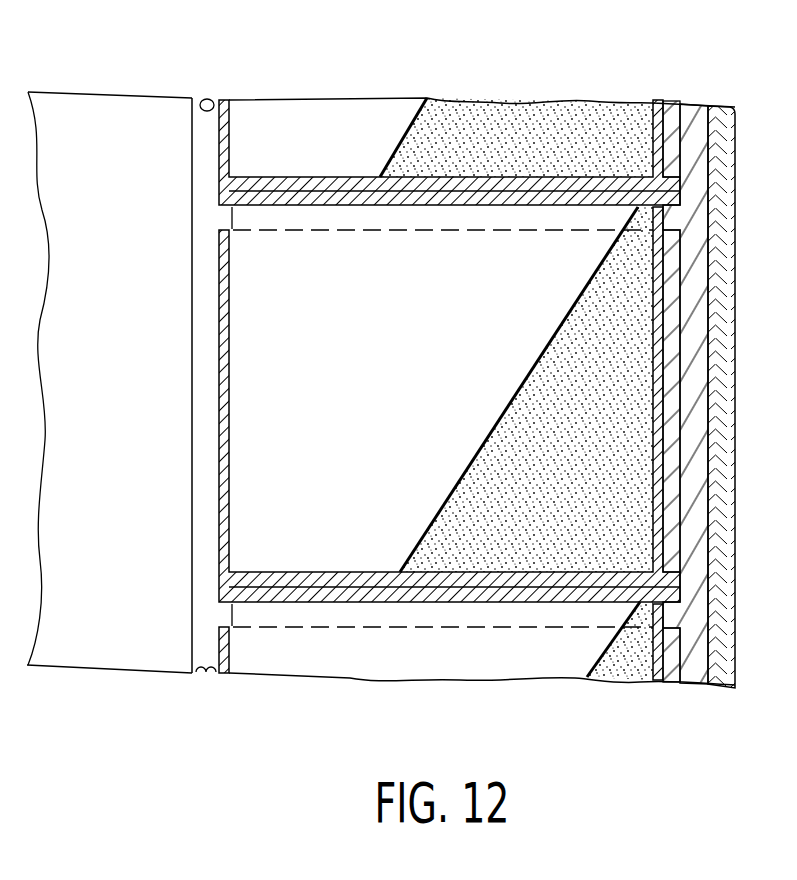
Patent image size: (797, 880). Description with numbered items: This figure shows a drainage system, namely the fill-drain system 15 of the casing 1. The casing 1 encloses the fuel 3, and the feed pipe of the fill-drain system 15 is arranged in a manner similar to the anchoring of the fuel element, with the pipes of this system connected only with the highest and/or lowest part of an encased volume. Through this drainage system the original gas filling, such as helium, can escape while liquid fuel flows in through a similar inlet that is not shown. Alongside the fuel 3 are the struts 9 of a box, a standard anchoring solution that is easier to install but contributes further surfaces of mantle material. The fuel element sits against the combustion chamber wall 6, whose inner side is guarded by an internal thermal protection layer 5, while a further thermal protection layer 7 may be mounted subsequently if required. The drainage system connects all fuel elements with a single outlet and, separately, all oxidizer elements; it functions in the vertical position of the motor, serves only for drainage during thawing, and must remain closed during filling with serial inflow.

The casing 1 is at (226, 100).
The fuel 3 is at (449, 350).
The internal thermal protection layer 5 is at (672, 101).
The combustion chamber wall 6 is at (707, 686).
The thermal protection layer (TPS) 7 is at (725, 106).
The struts 9 is at (554, 471).
The fill-drain system 15 is at (192, 353).